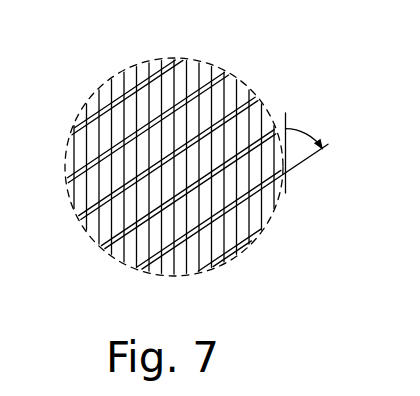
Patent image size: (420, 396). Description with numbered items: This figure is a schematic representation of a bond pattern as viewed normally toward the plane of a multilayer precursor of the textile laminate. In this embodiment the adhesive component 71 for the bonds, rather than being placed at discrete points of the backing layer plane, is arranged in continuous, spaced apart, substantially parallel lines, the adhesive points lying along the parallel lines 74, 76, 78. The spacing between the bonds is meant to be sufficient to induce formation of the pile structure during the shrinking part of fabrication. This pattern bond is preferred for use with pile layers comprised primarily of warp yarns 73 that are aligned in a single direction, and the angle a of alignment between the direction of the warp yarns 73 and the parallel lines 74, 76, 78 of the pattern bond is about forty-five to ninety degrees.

The adhesive component 71 is at (268, 113).
The warp yarns 73 is at (136, 67).
The parallel line 74 is at (80, 218).
The parallel line 76 is at (67, 185).
The parallel line 78 is at (73, 131).
The angle of alignment a is at (291, 125).